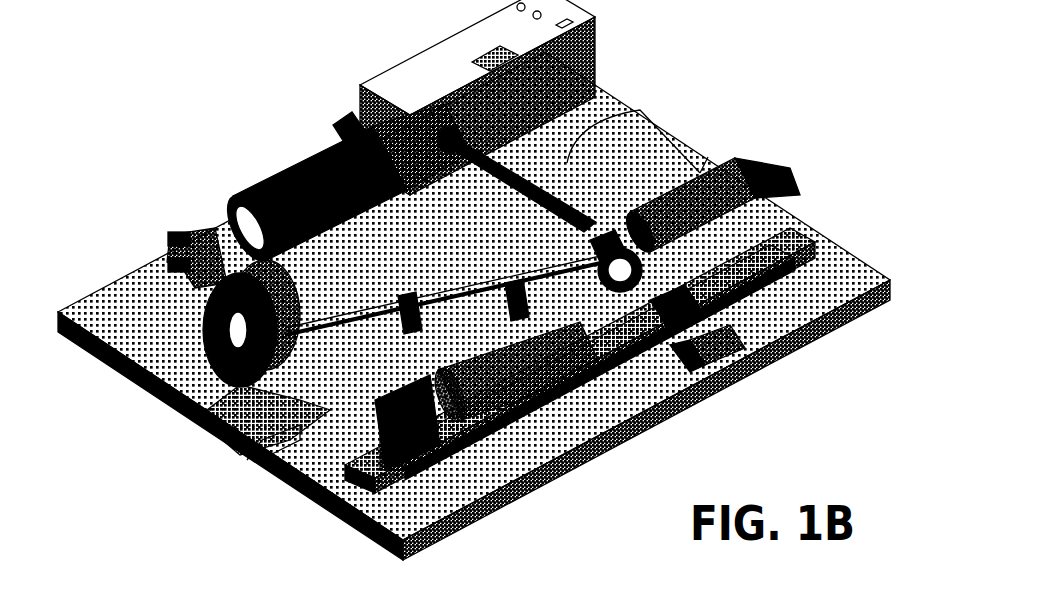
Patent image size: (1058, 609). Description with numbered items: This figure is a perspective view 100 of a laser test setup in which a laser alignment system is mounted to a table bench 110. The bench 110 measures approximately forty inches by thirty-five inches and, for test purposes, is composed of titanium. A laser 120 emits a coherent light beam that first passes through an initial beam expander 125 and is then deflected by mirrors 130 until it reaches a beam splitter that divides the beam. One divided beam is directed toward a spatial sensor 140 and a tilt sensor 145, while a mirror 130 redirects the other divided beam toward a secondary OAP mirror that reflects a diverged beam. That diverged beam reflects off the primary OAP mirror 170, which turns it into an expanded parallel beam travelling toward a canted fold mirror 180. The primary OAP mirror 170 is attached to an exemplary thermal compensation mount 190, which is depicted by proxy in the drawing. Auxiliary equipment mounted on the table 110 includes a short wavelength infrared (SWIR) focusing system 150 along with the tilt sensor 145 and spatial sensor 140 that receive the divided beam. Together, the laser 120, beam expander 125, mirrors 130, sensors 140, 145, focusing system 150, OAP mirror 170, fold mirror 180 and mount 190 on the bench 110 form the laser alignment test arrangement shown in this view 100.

The perspective view 100 is at (820, 84).
The table bench 110 is at (163, 329).
The laser 120 is at (443, 87).
The initial beam expander 125 is at (326, 218).
The mirrors 130 is at (205, 228).
The spatial sensor 140 is at (705, 160).
The tilt sensor 145 is at (707, 307).
The short wavelength infrared (SWIR) focusing system 150 is at (511, 397).
The primary OAP mirror 170 is at (247, 460).
The canted fold mirror 180 is at (567, 163).
The thermal compensation mount 190 is at (203, 413).